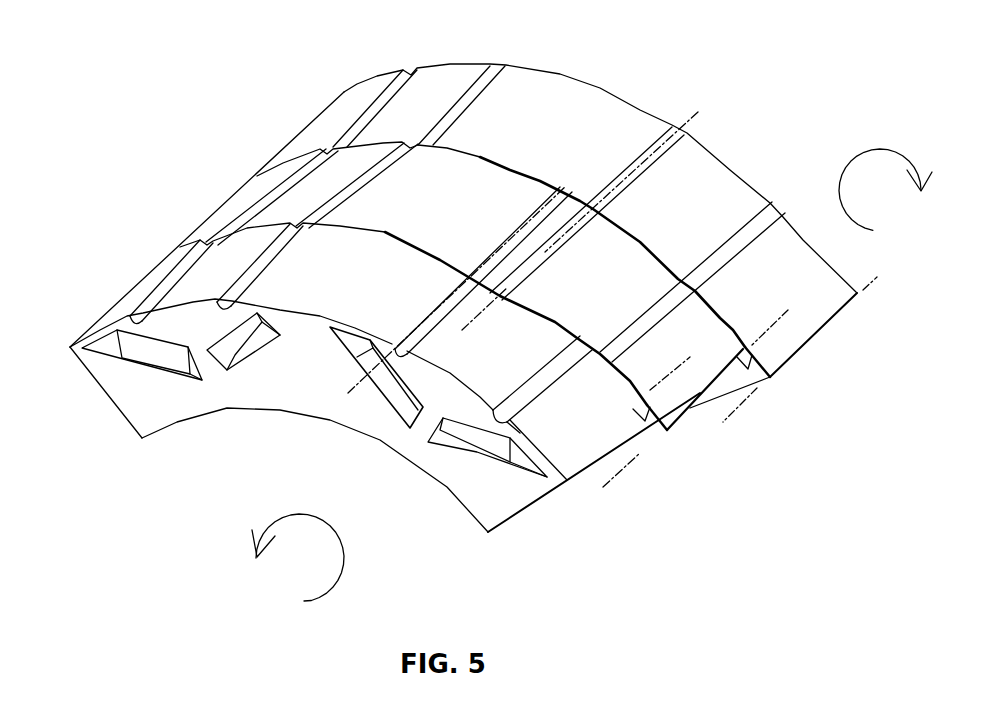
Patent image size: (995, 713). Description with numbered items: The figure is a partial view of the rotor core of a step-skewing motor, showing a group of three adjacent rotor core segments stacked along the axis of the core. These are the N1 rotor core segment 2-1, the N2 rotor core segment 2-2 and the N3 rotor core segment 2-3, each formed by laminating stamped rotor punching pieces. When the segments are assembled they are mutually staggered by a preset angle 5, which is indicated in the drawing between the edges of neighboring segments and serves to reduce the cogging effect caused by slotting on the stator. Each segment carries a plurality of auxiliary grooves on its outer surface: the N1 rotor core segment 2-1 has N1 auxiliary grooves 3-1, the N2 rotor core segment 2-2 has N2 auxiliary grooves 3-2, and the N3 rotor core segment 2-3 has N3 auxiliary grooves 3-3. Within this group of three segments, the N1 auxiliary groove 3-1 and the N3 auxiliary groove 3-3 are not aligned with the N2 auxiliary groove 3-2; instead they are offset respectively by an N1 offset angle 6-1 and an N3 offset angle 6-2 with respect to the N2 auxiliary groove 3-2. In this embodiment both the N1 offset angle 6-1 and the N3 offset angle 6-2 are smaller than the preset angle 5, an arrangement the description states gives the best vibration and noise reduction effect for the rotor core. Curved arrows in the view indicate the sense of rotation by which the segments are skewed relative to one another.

The N1 rotor core segment 2-1 is at (290, 380).
The N2 rotor core segment 2-2 is at (453, 200).
The N3 rotor core segment 2-3 is at (555, 128).
The N1 auxiliary groove 3-1 is at (282, 243).
The N2 auxiliary groove 3-2 is at (383, 173).
The N3 auxiliary groove 3-3 is at (502, 72).
The preset angle 5 is at (572, 147).
The N1 offset angle 6-1 is at (515, 320).
The N3 offset angle 6-2 is at (657, 197).